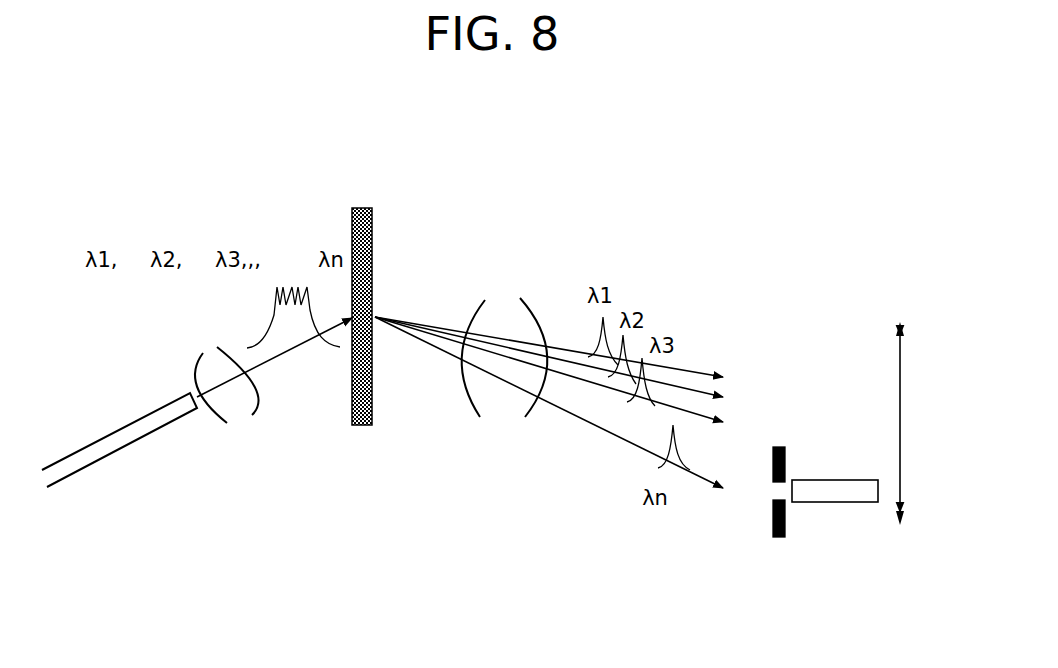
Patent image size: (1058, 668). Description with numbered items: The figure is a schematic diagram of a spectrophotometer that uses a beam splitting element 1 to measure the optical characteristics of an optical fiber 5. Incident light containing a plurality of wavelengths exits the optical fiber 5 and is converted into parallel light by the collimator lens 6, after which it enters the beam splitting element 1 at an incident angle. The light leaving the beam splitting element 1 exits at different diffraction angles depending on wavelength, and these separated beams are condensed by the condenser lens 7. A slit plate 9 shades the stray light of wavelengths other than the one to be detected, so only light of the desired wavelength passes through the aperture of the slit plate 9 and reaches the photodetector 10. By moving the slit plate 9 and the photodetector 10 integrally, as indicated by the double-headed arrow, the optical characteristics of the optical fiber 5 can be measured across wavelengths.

The beam splitting element 1 is at (373, 220).
The optical fiber 5 is at (150, 437).
The collimator lens 6 is at (307, 413).
The condenser lens 7 is at (543, 430).
The slit plate 9 is at (768, 530).
The photodetector 10 is at (840, 507).